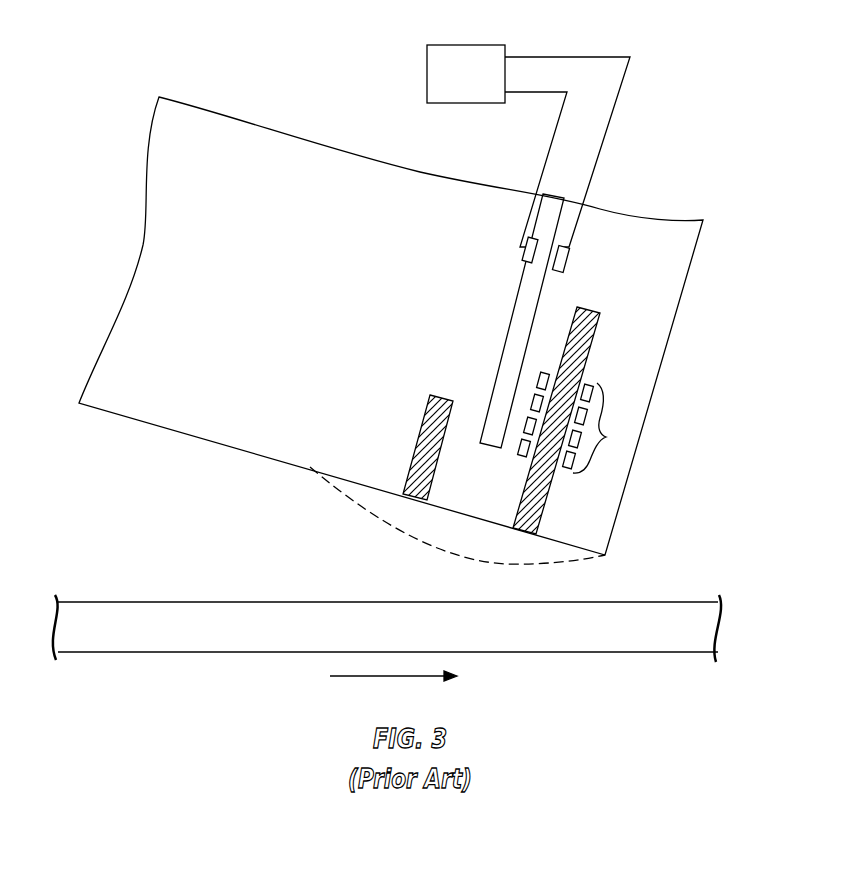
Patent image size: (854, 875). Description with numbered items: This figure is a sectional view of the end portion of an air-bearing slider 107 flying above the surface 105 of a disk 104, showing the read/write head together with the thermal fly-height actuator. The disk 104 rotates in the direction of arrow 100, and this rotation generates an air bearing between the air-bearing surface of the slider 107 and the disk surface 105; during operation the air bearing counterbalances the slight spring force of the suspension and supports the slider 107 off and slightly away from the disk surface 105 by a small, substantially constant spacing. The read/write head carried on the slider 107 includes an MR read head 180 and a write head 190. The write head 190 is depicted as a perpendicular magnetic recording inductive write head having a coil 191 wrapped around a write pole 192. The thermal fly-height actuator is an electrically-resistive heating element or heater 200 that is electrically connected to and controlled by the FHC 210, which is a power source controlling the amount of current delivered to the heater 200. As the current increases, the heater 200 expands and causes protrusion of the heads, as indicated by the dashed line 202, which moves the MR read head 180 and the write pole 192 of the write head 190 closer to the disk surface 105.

The arrow 100 is at (368, 677).
The disk 104 is at (625, 642).
The disk surface 105 is at (687, 602).
The slider 107 is at (262, 306).
The MR read head 180 is at (425, 412).
The write head 190 is at (570, 399).
The coil 191 is at (606, 437).
The write pole 192 is at (520, 497).
The heater 200 is at (518, 307).
The dashed line 202 is at (425, 531).
The FHC 210 is at (441, 45).